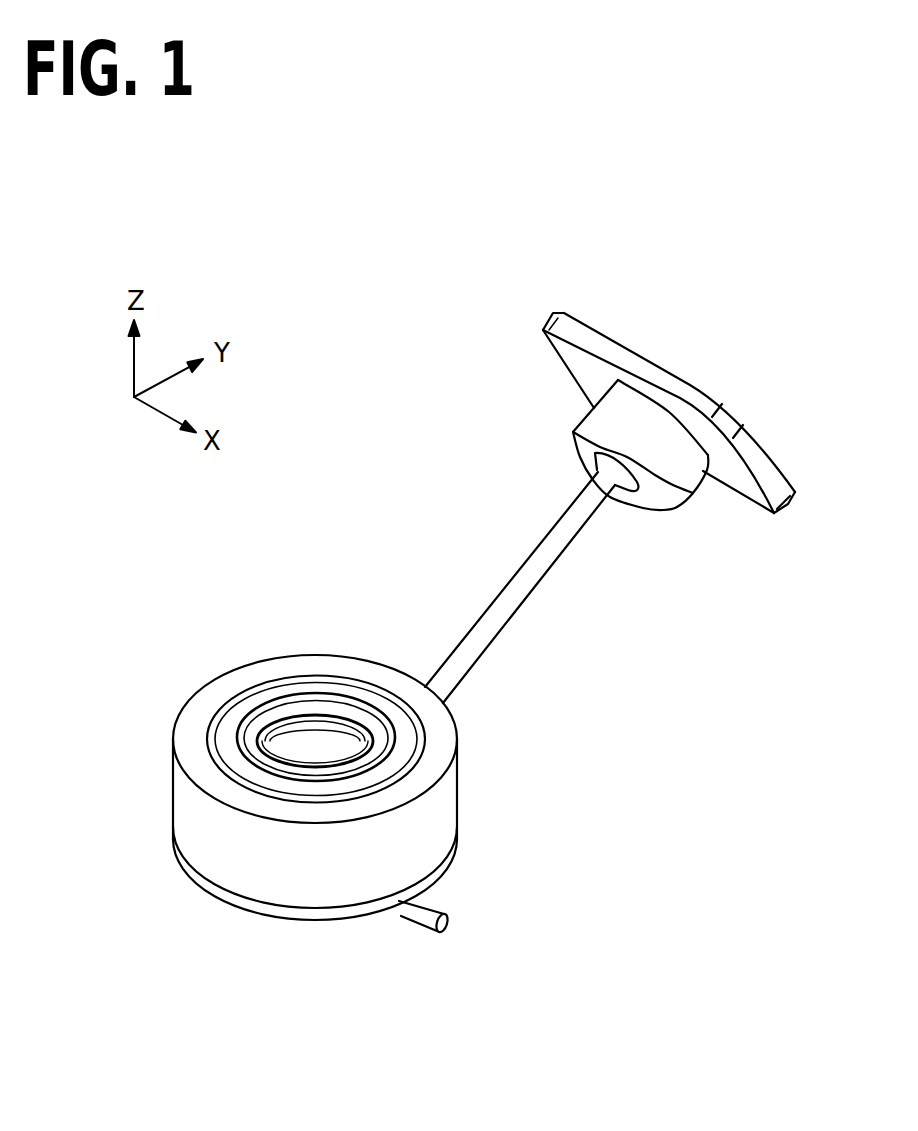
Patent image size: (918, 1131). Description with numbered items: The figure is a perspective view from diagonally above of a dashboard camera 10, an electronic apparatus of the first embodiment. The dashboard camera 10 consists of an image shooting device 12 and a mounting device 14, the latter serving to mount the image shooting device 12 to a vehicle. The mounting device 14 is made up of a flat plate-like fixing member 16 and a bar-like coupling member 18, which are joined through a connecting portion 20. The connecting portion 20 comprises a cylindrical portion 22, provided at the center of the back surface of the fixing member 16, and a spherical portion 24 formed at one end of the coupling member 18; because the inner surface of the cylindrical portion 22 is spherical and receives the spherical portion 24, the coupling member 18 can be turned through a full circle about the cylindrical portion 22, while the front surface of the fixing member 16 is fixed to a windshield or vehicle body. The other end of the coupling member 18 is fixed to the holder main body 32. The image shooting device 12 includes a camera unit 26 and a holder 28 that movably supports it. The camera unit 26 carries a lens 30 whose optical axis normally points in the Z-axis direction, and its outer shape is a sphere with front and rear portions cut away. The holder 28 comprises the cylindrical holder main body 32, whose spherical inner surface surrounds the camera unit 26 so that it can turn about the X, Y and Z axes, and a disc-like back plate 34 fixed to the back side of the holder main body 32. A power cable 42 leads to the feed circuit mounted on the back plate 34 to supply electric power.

The dashboard camera 10 is at (412, 490).
The image shooting device 12 is at (475, 805).
The mounting device 14 is at (546, 593).
The fixing member 16 is at (673, 378).
The coupling member 18 is at (487, 613).
The connecting portion 20 is at (572, 413).
The cylindrical portion 22 is at (681, 483).
The spherical portion 24 is at (627, 485).
The camera unit 26 is at (268, 672).
The holder 28 is at (472, 778).
The lens 30 is at (280, 743).
The holder main body 32 is at (371, 888).
The back plate 34 is at (296, 912).
The power cable 42 is at (438, 906).